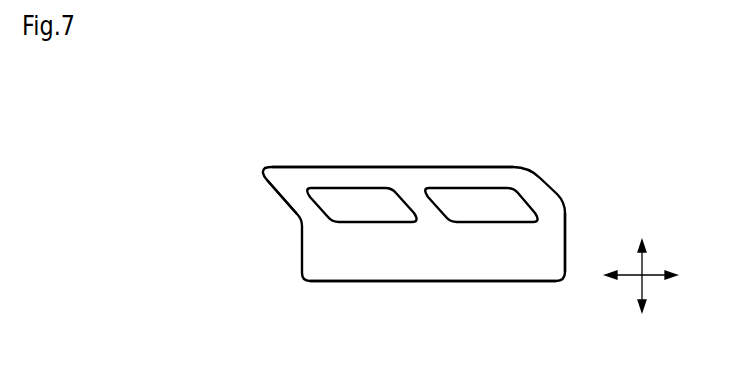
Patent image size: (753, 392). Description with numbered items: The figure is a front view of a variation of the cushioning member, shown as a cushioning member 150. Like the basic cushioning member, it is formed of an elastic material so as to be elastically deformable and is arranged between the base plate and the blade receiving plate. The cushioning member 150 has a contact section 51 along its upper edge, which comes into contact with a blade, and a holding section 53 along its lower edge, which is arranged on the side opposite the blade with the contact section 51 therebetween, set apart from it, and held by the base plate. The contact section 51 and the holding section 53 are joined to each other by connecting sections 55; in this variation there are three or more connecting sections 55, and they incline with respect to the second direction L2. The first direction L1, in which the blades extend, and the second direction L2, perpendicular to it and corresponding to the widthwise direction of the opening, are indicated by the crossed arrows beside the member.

The cushioning member 150 is at (253, 133).
The contact section 51 is at (394, 178).
The holding section 53 is at (423, 262).
The connecting sections 55 is at (423, 207).
The first direction L1 is at (648, 278).
The second direction L2 is at (645, 263).